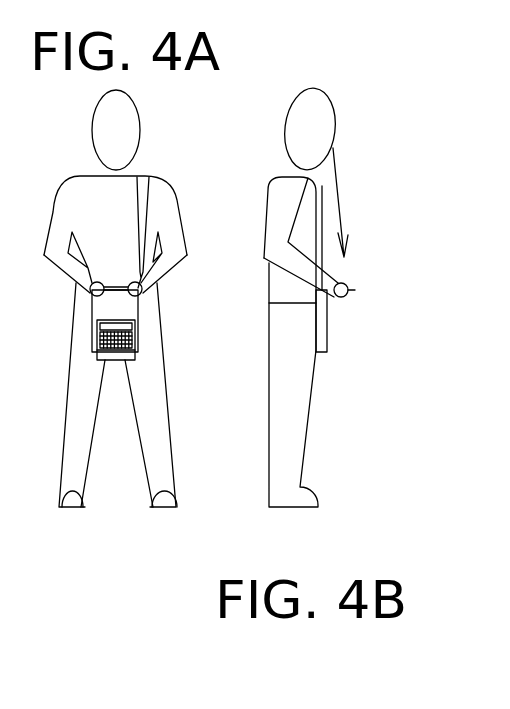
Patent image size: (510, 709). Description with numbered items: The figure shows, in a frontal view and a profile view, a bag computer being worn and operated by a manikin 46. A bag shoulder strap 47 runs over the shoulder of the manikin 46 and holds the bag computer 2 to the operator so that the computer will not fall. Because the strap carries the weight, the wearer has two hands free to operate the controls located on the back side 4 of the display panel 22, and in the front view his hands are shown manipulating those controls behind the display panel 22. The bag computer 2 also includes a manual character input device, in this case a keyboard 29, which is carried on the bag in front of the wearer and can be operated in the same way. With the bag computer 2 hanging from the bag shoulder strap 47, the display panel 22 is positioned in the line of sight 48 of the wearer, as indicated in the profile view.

In FIG. 4A, the bag computer 2 is at (122, 310).
In FIG. 4B, the bag computer 2 is at (317, 308).
In FIG. 4B, the back side 4 is at (352, 296).
In FIG. 4B, the display panel 22 is at (354, 292).
In FIG. 4A, the keyboard 29 is at (130, 350).
In FIG. 4A, the manikin 46 is at (175, 182).
In FIG. 4B, the manikin 46 is at (267, 178).
In FIG. 4A, the bag shoulder strap 47 is at (143, 180).
In FIG. 4B, the line of sight 48 is at (340, 173).